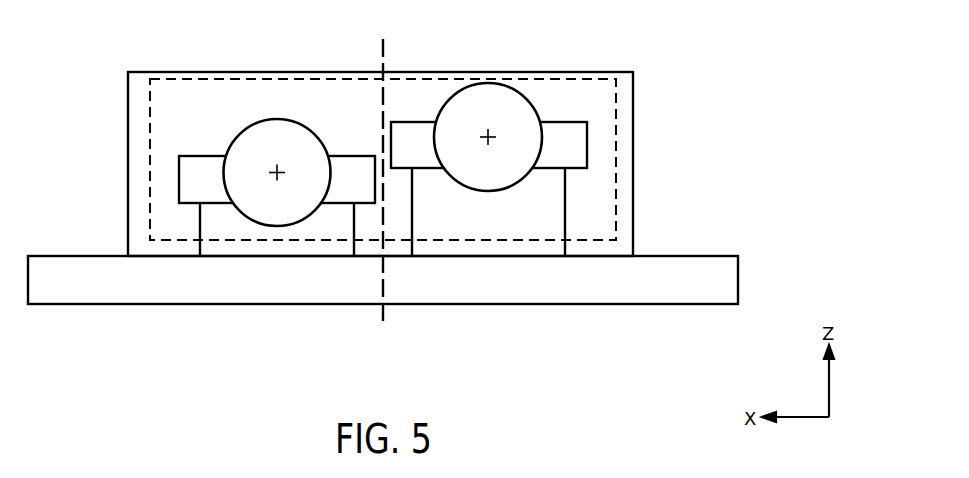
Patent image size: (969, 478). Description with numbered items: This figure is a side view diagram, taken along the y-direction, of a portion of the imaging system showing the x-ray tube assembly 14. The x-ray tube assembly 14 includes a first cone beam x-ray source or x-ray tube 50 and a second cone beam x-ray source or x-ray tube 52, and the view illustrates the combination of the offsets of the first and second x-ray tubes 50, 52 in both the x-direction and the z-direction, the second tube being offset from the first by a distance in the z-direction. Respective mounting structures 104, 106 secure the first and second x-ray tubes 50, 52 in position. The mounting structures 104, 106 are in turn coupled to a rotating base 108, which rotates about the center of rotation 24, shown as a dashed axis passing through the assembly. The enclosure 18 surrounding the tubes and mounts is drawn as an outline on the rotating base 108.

The x-ray tube assembly 14 is at (133, 179).
The housing 18 is at (200, 72).
The center of rotation 24 is at (384, 62).
The first cone beam x-ray source 50 is at (205, 138).
The second cone beam x-ray source 52 is at (521, 200).
The mounting structure 104 is at (240, 231).
The mounting structure 106 is at (458, 218).
The rotating base 108 is at (255, 305).